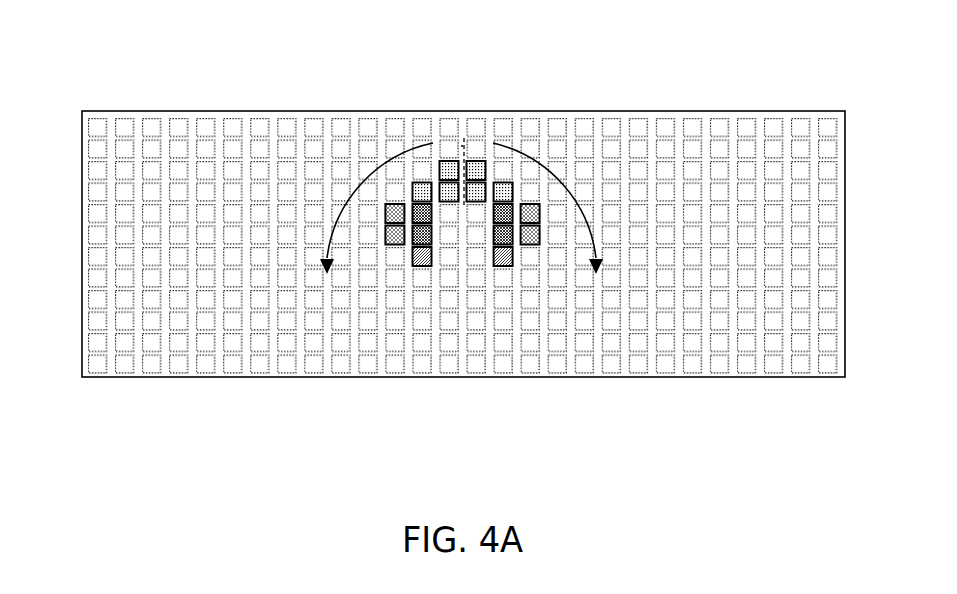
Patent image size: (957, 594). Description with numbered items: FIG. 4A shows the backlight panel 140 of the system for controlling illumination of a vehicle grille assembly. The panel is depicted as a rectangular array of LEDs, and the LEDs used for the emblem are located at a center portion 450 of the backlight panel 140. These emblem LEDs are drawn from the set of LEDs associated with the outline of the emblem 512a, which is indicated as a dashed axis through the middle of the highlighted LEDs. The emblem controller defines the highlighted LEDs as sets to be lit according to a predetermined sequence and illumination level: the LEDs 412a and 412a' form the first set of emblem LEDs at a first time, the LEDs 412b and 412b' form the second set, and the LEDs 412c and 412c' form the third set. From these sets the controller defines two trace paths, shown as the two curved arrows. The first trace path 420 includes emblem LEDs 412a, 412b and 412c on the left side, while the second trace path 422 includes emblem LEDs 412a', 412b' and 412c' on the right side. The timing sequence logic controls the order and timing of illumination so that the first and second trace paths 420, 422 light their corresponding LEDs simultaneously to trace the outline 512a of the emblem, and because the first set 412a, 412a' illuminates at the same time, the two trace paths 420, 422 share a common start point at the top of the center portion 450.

The backlight panel 140 is at (139, 51).
The first trace path 420 is at (370, 221).
The second trace path 422 is at (555, 221).
The center portion 450 is at (461, 128).
The outline of the emblem 512a is at (464, 138).
The emblem LED of the first set 412a is at (404, 137).
The emblem LED of the first set 412a' is at (524, 137).
The emblem LED of the second set 412b is at (336, 318).
The emblem LED of the second set 412b' is at (590, 318).
The emblem LED of the third set 412c is at (393, 319).
The emblem LED of the third set 412c' is at (536, 319).